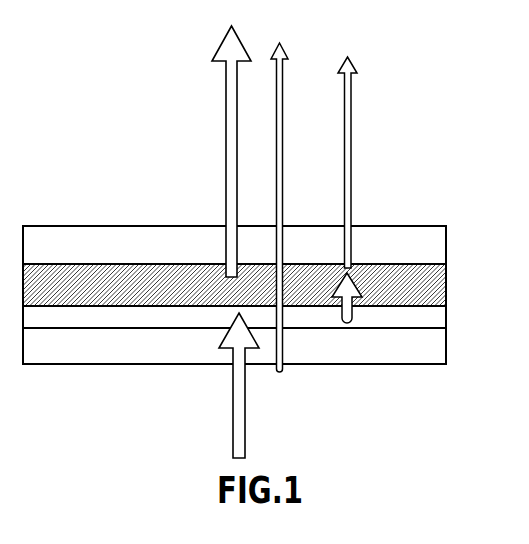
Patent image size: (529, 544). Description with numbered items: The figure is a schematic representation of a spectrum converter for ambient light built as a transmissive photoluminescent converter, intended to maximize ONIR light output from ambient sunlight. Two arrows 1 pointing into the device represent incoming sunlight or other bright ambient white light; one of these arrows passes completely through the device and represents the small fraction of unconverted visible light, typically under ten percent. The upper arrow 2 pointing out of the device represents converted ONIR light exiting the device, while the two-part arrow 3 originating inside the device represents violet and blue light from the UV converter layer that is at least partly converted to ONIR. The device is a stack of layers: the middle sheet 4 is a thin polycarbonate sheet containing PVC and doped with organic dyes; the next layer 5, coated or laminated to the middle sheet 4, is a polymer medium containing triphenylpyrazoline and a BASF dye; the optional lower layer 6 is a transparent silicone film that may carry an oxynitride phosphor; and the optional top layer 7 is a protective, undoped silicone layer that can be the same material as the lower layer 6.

The arrows representing incoming light 1 is at (347, 323).
The upper arrow 2 is at (227, 118).
The two-part arrow 3 is at (349, 109).
The middle sheet 4 is at (440, 282).
The next layer 5 is at (440, 318).
The lower layer 6 is at (440, 348).
The top layer 7 is at (439, 247).